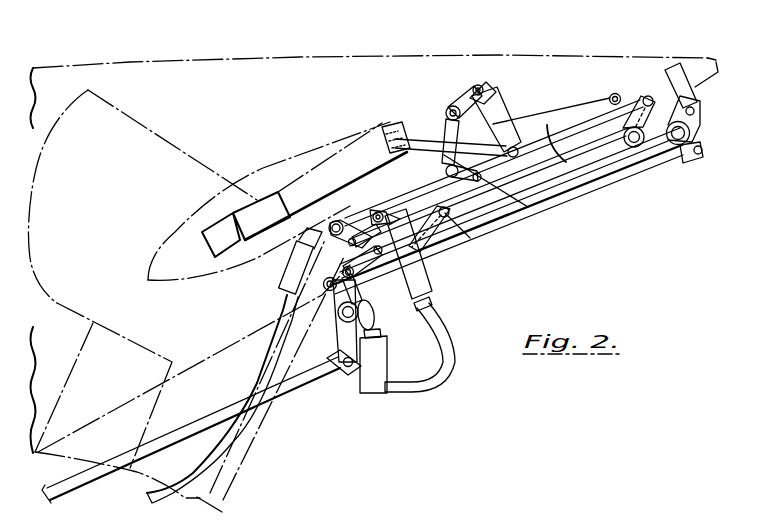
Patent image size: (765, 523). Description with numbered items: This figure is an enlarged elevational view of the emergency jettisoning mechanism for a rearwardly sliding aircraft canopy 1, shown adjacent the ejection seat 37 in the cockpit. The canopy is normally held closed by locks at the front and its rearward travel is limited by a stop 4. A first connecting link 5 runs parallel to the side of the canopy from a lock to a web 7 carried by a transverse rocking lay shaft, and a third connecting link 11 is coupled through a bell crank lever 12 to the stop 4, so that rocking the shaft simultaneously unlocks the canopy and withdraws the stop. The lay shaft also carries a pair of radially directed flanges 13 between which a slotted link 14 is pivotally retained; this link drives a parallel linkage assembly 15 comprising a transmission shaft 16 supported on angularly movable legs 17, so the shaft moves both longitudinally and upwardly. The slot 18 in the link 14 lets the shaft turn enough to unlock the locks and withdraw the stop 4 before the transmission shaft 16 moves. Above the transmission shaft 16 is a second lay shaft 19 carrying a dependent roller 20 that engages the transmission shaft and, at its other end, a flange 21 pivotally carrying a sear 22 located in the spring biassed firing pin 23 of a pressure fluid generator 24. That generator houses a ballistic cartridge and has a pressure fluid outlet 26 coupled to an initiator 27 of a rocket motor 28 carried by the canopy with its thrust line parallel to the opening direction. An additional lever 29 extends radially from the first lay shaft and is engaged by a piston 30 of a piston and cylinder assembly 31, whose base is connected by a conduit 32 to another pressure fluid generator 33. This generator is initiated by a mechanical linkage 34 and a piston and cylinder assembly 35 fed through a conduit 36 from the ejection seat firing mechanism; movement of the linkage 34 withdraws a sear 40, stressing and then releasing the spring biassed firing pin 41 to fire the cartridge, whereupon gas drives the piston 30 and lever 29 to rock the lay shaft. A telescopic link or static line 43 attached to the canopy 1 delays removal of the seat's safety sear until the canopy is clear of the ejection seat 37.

The canopy 1 is at (66, 72).
The stop 4 is at (690, 66).
The first connecting link 5 is at (313, 381).
The web 7 is at (343, 345).
The third connecting link 11 is at (636, 168).
The bell crank lever 12 is at (690, 130).
The radially directed flanges 13 is at (368, 285).
The slotted link 14 is at (377, 262).
The parallel linkage assembly 15 is at (593, 111).
The transmission shaft 16 is at (568, 136).
The angularly movable legs 17 is at (652, 115).
The slot 18 is at (339, 268).
The second lay shaft 19 is at (528, 210).
The dependent roller 20 is at (534, 209).
The flange 21 is at (448, 108).
The sear 22 is at (505, 101).
The spring biassed firing pin 23 is at (486, 89).
The pressure fluid generator 24 is at (496, 122).
The pressure fluid outlet 26 is at (406, 137).
The initiator 27 is at (392, 126).
The rocket motor 28 is at (338, 150).
The additional lever 29 is at (375, 313).
The piston 30 is at (382, 334).
The piston and cylinder assembly 31 is at (375, 356).
The conduit 32 is at (448, 370).
The pressure fluid generator 33 is at (434, 278).
The mechanical linkage 34 is at (355, 225).
The piston and cylinder assembly 35 is at (300, 263).
The conduit 36 is at (208, 458).
The ejection seat 37 is at (125, 165).
The sear 40 is at (440, 210).
The spring biassed firing pin 41 is at (385, 212).
The telescopic link or static line 43 is at (568, 163).